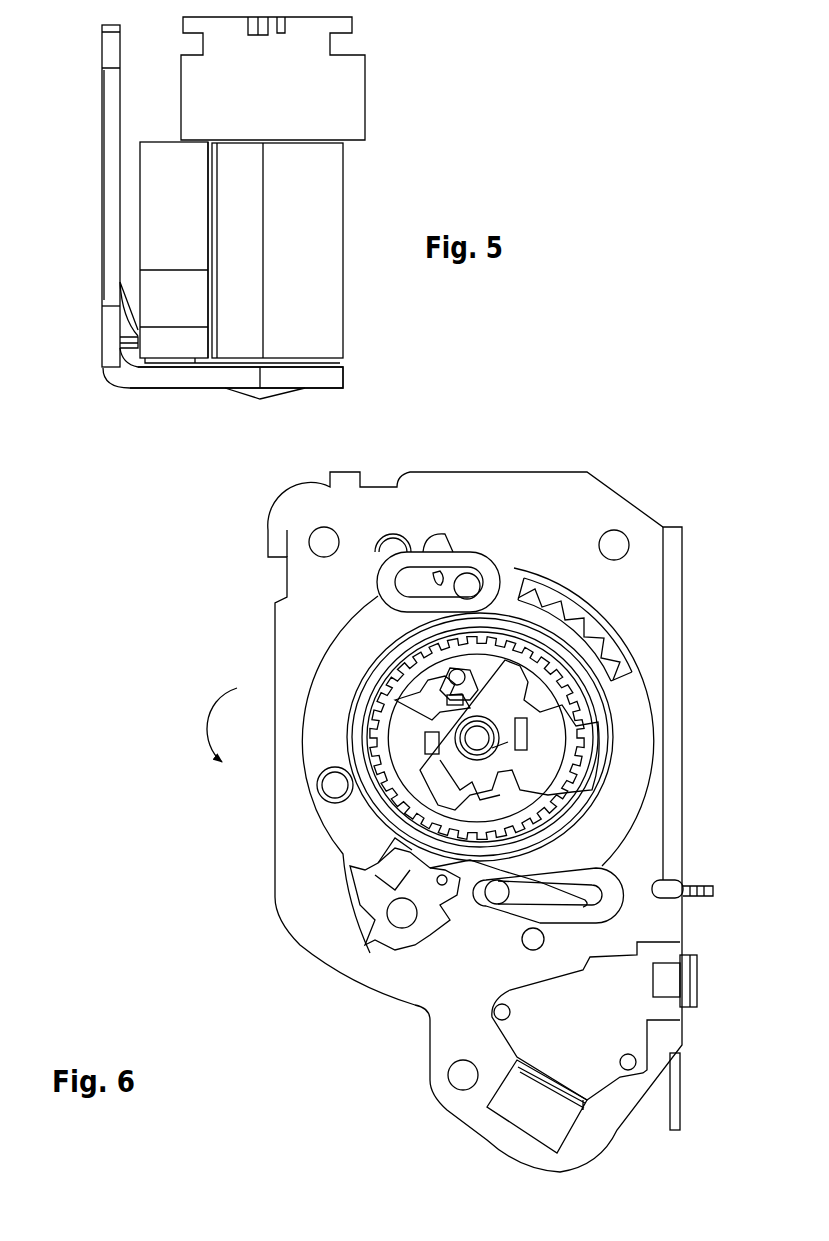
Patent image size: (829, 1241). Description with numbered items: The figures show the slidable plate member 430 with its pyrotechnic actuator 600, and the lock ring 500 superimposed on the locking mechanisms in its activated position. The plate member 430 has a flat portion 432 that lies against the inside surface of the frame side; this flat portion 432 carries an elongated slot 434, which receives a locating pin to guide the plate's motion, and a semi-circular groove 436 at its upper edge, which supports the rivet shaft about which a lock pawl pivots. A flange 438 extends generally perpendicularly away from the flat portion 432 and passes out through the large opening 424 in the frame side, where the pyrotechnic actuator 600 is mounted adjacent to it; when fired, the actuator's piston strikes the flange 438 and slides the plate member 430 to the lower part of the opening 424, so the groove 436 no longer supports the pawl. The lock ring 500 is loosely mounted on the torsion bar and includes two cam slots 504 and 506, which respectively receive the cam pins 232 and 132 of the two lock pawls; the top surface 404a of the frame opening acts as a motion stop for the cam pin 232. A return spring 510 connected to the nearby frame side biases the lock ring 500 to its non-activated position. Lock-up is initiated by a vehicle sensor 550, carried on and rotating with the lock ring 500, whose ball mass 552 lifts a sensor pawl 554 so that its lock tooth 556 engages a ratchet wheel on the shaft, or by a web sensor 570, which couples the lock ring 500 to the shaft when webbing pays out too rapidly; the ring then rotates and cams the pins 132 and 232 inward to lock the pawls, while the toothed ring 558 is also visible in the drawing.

In FIG. 5, the plate member 430 is at (103, 98).
In FIG. 5, the semi-circular groove 436 is at (107, 60).
In FIG. 5, the flat portion 432 is at (107, 135).
In FIG. 5, the elongated slot 434 is at (110, 300).
In FIG. 5, the flange 438 is at (175, 376).
In FIG. 5, the pyrotechnic actuator 600 is at (372, 106).
In FIG. 6, the pyrotechnic actuator 600 is at (607, 1025).
In FIG. 6, the lock ring 500 is at (488, 560).
In FIG. 6, the cam slot 504 is at (436, 572).
In FIG. 6, the top surface of opening 404a is at (467, 583).
In FIG. 6, the cam pin 232 is at (492, 565).
In FIG. 6, the return spring 510 is at (577, 610).
In FIG. 6, the ring gear 558 is at (355, 712).
In FIG. 6, the web sensor 570 is at (548, 740).
In FIG. 6, the mass 552 is at (385, 690).
In FIG. 6, the vehicle sensor 550 is at (395, 942).
In FIG. 6, the sensor pawl 554 is at (385, 862).
In FIG. 6, the lock tooth 556 is at (400, 845).
In FIG. 6, the cam slot 506 is at (607, 923).
In FIG. 6, the cam pin 132 is at (497, 906).
In FIG. 6, the opening 424 is at (514, 1106).